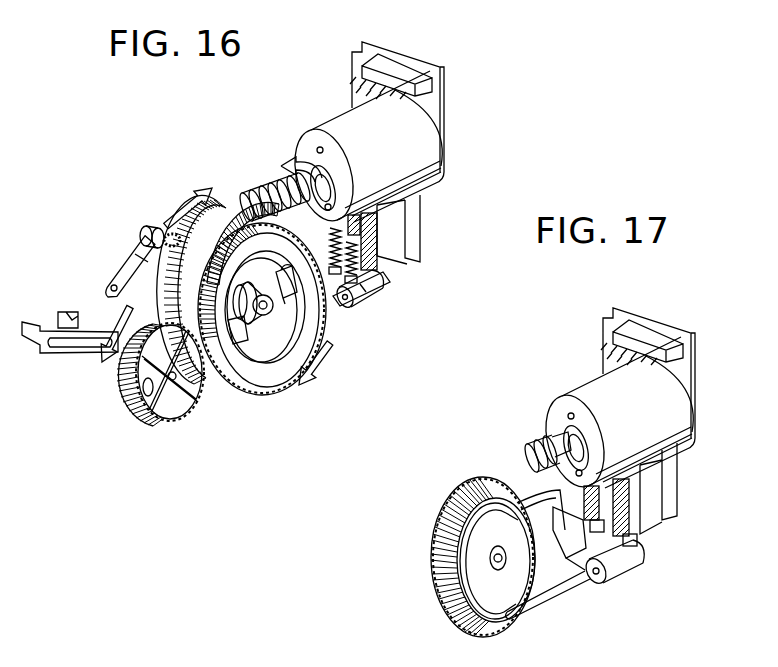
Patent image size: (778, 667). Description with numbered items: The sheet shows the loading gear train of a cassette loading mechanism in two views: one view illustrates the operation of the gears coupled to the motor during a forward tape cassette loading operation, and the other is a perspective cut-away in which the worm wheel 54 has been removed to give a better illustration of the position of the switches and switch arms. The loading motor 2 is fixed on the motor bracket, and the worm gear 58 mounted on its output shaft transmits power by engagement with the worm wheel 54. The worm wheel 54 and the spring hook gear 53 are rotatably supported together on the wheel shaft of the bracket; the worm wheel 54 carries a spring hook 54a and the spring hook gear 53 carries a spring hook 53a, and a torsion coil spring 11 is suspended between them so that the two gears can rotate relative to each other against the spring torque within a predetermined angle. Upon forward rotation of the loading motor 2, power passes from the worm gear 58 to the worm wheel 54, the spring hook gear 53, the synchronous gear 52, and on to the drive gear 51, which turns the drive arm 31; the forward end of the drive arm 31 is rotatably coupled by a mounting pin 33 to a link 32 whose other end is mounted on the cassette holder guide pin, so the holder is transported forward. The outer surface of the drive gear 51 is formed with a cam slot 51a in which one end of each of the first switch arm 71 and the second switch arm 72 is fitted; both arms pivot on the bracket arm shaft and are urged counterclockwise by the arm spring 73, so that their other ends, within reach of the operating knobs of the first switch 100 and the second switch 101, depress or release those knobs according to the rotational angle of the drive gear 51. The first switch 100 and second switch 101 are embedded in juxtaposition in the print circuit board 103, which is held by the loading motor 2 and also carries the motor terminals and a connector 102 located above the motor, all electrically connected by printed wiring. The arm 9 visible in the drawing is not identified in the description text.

In FIG. 16, the loading motor 2 is at (427, 183).
In FIG. 17, the loading motor 2 is at (624, 415).
In FIG. 16, the lever arm 9 is at (72, 340).
In FIG. 16, the torsion coil spring 11 is at (293, 297).
In FIG. 16, the drive arm 31 is at (162, 243).
In FIG. 16, the link 32 is at (120, 260).
In FIG. 16, the mounting pin 33 is at (150, 252).
In FIG. 16, the drive gear 51 is at (230, 200).
In FIG. 17, the drive gear 51 is at (483, 478).
In FIG. 17, the cam slot 51a is at (457, 590).
In FIG. 16, the synchronous gear 52 is at (172, 410).
In FIG. 16, the spring hook gear 53 is at (215, 193).
In FIG. 16, the spring hook 53a is at (240, 340).
In FIG. 16, the worm wheel 54 is at (263, 372).
In FIG. 16, the spring hook 54a is at (332, 371).
In FIG. 16, the worm gear 58 is at (266, 188).
In FIG. 17, the worm gear 58 is at (533, 447).
In FIG. 16, the first switch arm 71 is at (360, 298).
In FIG. 17, the first switch arm 71 is at (620, 566).
In FIG. 17, the second switch arm 72 is at (541, 585).
In FIG. 16, the arm spring 73 is at (375, 290).
In FIG. 16, the first switch 100 is at (388, 241).
In FIG. 17, the first switch 100 is at (651, 505).
In FIG. 16, the second switch 101 is at (355, 226).
In FIG. 17, the second switch 101 is at (602, 503).
In FIG. 16, the connector 102 is at (408, 72).
In FIG. 17, the connector 102 is at (648, 319).
In FIG. 16, the print circuit board 103 is at (442, 100).
In FIG. 17, the print circuit board 103 is at (656, 393).